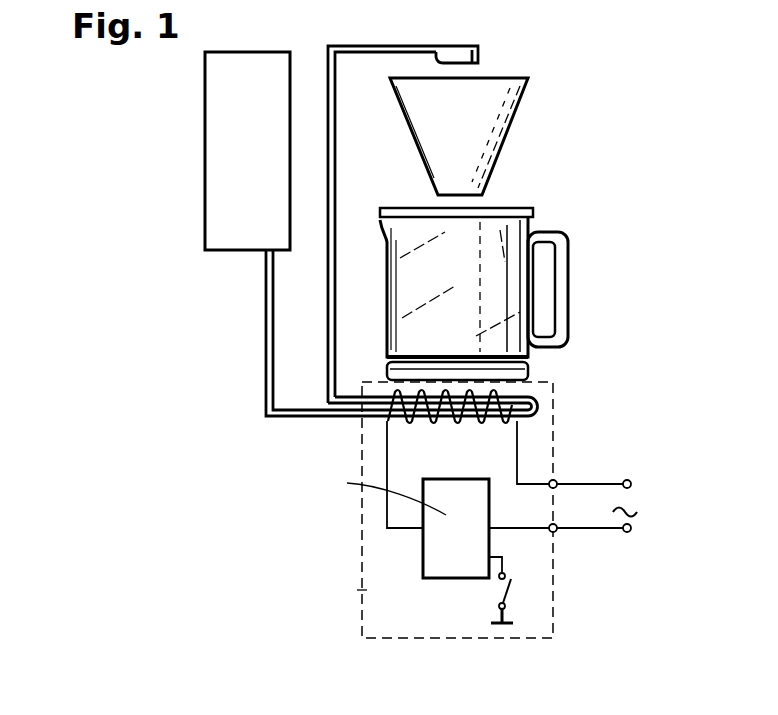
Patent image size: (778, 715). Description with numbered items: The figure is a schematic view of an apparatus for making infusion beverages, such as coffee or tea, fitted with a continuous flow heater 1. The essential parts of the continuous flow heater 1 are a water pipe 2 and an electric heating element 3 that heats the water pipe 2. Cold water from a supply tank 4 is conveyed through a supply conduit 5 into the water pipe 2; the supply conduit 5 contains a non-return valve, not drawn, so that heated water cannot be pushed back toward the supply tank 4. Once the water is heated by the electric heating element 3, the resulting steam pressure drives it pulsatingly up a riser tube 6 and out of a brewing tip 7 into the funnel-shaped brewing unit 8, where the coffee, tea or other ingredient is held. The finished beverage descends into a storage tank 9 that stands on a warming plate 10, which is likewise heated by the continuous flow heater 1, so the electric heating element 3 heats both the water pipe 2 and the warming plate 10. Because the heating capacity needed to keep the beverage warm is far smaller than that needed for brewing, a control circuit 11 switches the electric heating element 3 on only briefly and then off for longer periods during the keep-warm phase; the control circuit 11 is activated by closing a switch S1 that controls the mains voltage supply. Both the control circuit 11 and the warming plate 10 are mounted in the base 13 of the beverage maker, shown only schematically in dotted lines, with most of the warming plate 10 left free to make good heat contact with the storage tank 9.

The continuous flow heater 1 is at (541, 395).
The water pipe 2 is at (540, 410).
The electric heating element 3 is at (441, 420).
The supply tank 4 is at (217, 157).
The supply conduit 5 is at (266, 297).
The riser tube 6 is at (335, 352).
The brewing tip 7 is at (467, 55).
The brewing unit 8 is at (505, 113).
The storage tank 9 is at (524, 229).
The warming plate 10 is at (535, 372).
The control circuit 11 is at (452, 565).
The base 13 is at (362, 590).
The switch S1 is at (509, 596).